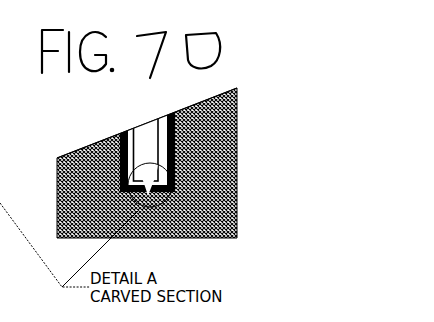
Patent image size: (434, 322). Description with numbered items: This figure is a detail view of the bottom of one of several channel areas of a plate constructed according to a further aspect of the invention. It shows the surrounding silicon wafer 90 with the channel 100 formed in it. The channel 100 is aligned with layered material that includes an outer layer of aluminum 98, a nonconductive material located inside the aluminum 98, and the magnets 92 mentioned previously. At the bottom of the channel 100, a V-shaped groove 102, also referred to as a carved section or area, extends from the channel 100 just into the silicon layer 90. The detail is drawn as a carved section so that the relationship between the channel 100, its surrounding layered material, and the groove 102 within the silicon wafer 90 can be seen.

The silicon wafer 90 is at (147, 163).
The magnets 92 is at (111, 136).
The outer layer of aluminum 98 is at (158, 124).
The channel 100 is at (154, 144).
The V-shaped groove 102 is at (167, 202).